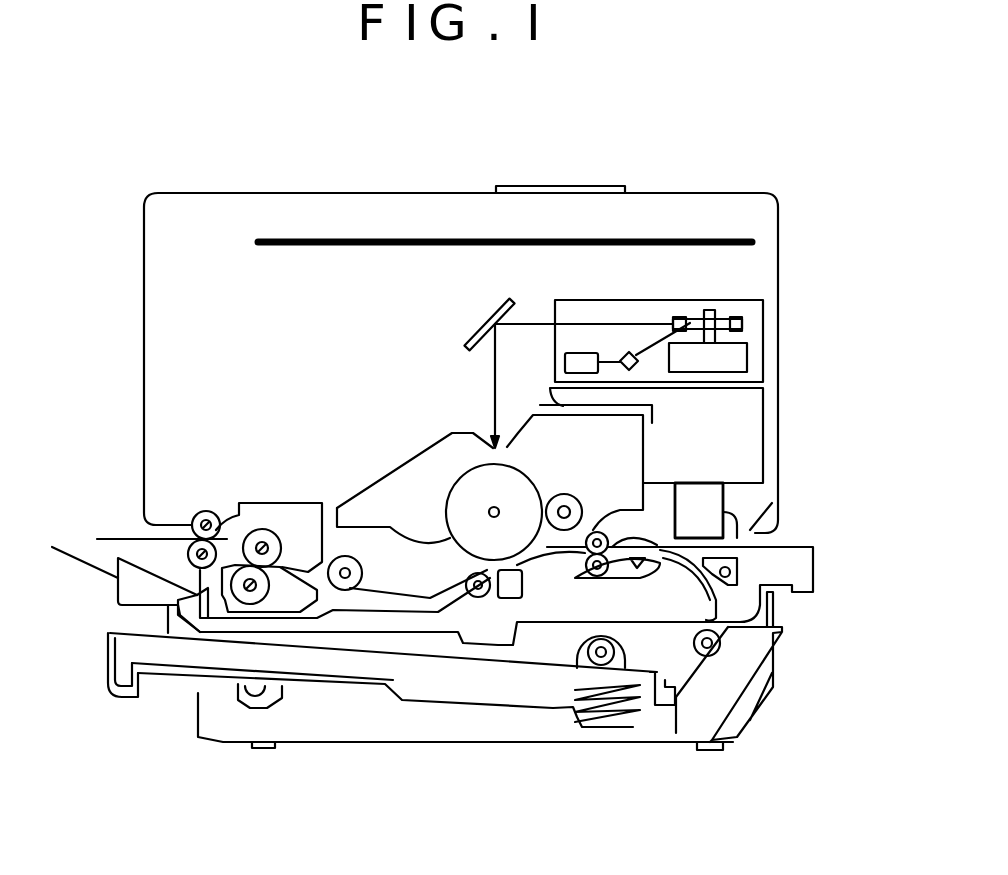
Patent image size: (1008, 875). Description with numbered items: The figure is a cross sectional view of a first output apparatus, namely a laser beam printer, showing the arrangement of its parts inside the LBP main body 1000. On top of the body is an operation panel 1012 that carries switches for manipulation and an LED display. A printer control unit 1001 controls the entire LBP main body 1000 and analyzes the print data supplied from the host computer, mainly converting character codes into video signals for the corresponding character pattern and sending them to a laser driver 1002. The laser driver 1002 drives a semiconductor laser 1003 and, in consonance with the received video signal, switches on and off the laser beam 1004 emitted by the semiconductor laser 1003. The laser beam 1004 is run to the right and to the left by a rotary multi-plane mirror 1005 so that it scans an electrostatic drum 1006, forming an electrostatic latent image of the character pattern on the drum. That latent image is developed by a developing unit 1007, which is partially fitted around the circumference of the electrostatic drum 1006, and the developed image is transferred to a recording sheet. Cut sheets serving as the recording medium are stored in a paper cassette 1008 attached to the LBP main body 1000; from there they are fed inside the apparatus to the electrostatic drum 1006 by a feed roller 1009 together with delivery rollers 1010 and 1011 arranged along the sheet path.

The LBP main body 1000 is at (706, 192).
The printer control unit 1001 is at (740, 239).
The laser driver 1002 is at (565, 358).
The semiconductor laser 1003 is at (636, 360).
The laser beam 1004 is at (640, 323).
The rotary multi-plane mirror 1005 is at (743, 322).
The electrostatic drum 1006 is at (482, 479).
The developing unit 1007 is at (392, 508).
The paper cassette 1008 is at (107, 695).
The feed roller 1009 is at (597, 655).
The delivery roller 1010 is at (715, 653).
The delivery roller 1011 is at (600, 572).
The operation panel 1012 is at (555, 187).